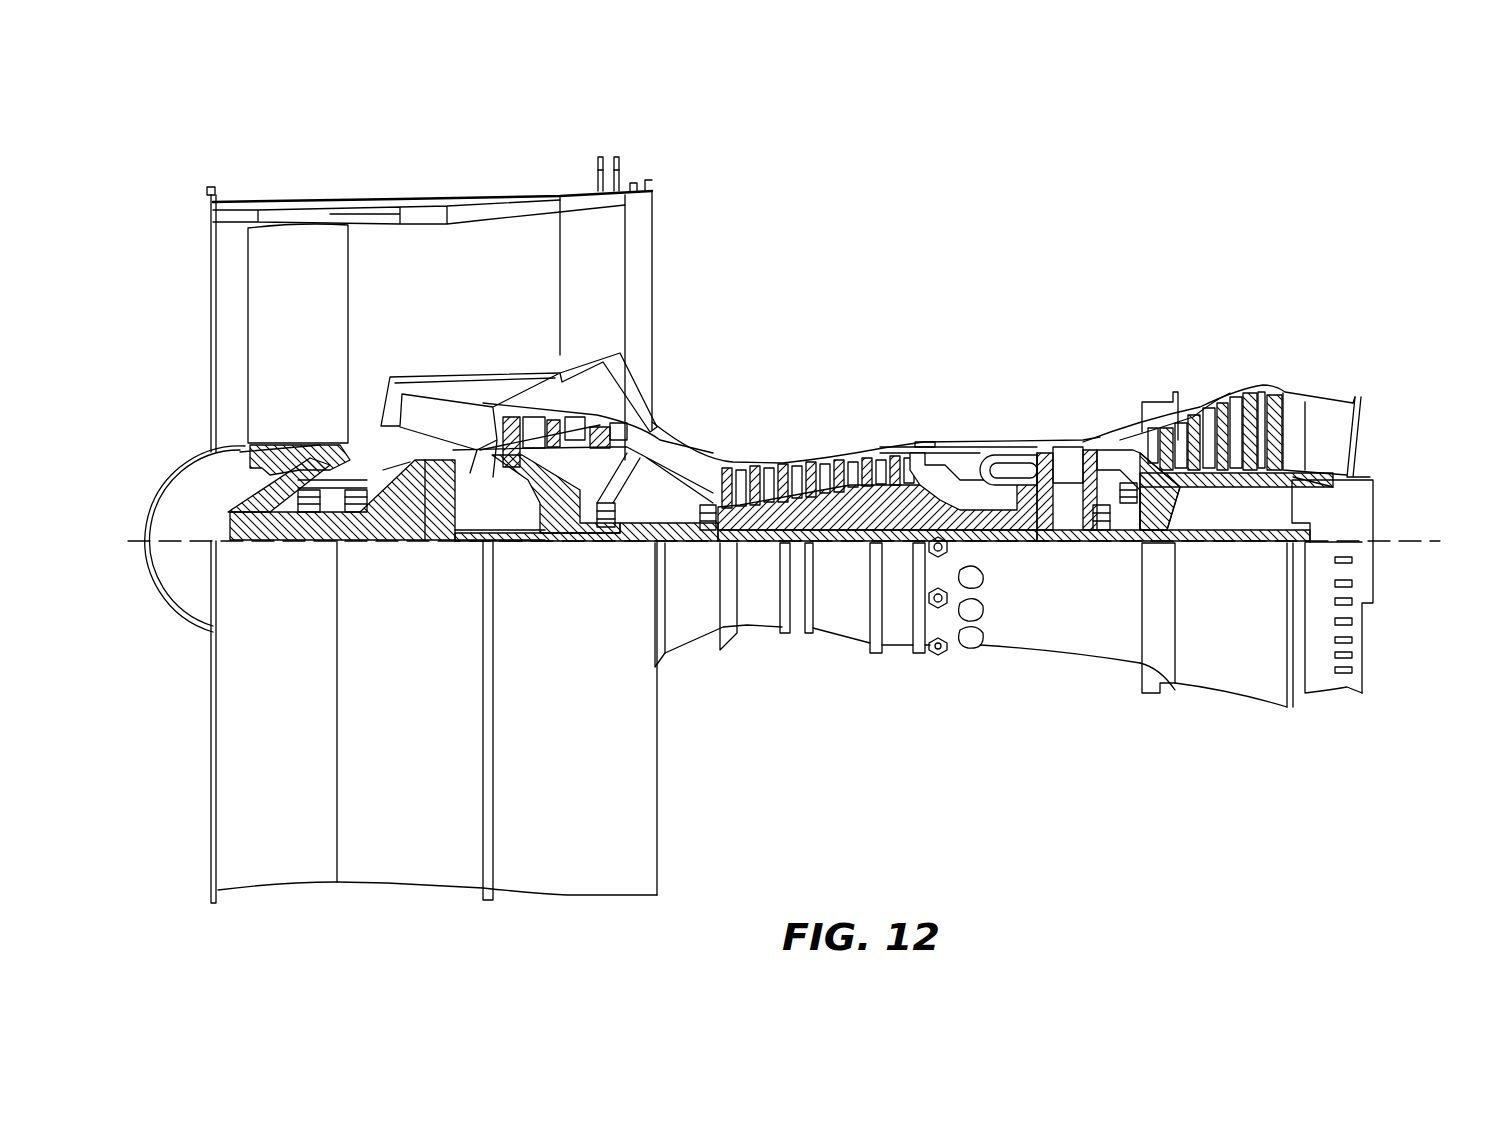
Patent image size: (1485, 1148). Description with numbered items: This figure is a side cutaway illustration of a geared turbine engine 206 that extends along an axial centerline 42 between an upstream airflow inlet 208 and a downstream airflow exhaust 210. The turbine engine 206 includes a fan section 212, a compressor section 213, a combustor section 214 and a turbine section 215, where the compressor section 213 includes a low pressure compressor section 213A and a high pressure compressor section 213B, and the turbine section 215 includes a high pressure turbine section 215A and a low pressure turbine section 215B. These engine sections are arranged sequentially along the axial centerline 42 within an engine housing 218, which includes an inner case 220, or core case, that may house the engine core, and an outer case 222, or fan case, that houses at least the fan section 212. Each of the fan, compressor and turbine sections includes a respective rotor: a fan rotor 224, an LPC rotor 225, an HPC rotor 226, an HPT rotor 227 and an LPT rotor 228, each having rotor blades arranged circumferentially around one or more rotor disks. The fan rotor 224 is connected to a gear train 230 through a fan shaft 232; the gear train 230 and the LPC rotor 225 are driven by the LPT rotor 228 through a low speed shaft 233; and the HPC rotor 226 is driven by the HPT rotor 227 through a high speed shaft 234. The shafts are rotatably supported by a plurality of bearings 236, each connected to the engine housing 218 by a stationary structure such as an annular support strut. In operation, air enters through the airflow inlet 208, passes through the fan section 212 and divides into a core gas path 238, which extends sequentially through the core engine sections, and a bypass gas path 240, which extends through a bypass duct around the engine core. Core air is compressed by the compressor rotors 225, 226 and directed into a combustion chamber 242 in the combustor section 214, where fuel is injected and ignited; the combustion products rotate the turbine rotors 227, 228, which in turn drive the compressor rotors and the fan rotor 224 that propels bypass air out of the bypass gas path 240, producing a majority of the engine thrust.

The geared turbine engine 206 is at (171, 165).
The airflow inlet 208 is at (212, 277).
The airflow exhaust 210 is at (1370, 420).
The fan section 212 is at (400, 170).
The compressor section 213 is at (477, 107).
The low pressure compressor (LPC) section 213A is at (477, 157).
The high pressure compressor (HPC) section 213B is at (685, 365).
The combustor section 214 is at (920, 365).
The turbine section 215 is at (1037, 288).
The high pressure turbine (HPT) section 215A is at (1037, 365).
The low pressure turbine (LPT) section 215B is at (1318, 365).
The engine housing 218 is at (696, 676).
The inner case 220 is at (897, 645).
The outer case 222 is at (607, 897).
The fan rotor 224 is at (228, 462).
The LPC rotor 225 is at (553, 492).
The HPC rotor 226 is at (846, 498).
The HPT rotor 227 is at (1062, 543).
The LPT rotor 228 is at (1222, 484).
The gear train 230 is at (436, 543).
The fan shaft 232 is at (287, 541).
The low speed shaft 233 is at (1233, 543).
The high speed shaft 234 is at (993, 548).
The bearings 236 is at (306, 541).
The core gas path 238 is at (693, 460).
The bypass gas path 240 is at (441, 308).
The combustion chamber 242 is at (990, 468).
The axial centerline 42 is at (1428, 545).